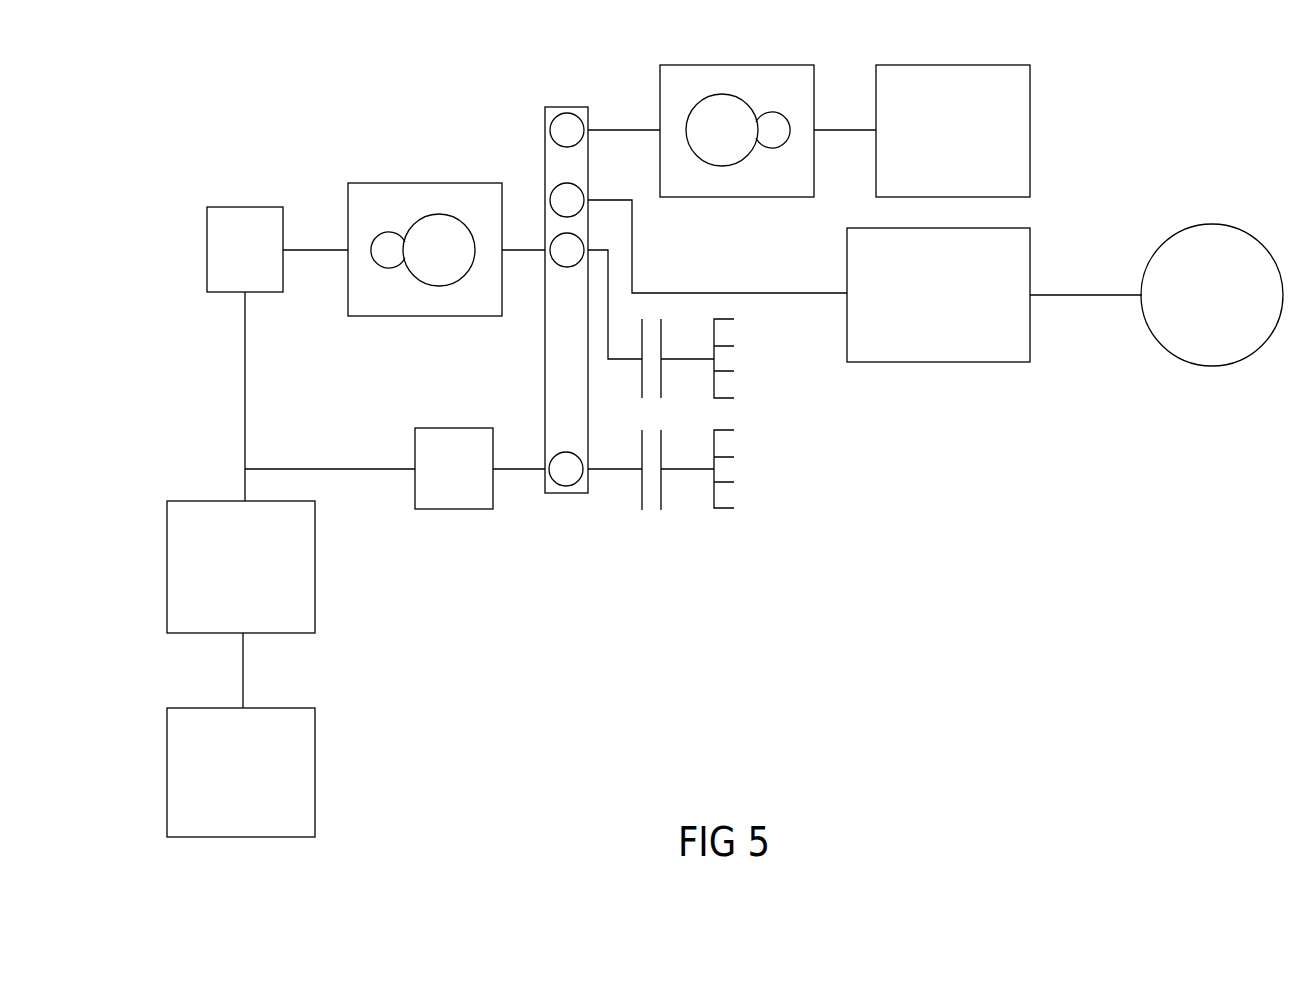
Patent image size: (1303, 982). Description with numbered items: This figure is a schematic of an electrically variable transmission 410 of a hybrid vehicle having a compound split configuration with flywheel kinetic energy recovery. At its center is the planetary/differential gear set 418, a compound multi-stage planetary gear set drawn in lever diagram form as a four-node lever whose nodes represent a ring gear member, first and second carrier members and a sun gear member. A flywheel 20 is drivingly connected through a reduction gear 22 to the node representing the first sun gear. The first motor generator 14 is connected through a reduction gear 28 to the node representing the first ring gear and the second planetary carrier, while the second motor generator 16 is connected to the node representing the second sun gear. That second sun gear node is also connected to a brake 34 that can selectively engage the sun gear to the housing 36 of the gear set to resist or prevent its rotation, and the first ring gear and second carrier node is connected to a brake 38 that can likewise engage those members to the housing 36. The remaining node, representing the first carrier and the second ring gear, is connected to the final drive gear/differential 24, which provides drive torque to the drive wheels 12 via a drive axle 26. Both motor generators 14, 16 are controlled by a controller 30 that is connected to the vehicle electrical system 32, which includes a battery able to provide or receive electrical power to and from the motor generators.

The drive wheels 12 is at (1201, 306).
The first motor generator 14 is at (234, 261).
The second motor generator 16 is at (443, 479).
The flywheel 20 is at (942, 141).
The reduction gear 22 is at (711, 141).
The final drive gear/differential 24 is at (926, 306).
The drive axle 26 is at (1090, 295).
The reduction gear 28 is at (428, 261).
The controller 30 is at (232, 581).
The vehicle electrical system 32 is at (232, 791).
The brake 34 is at (652, 512).
The housing 36 is at (725, 369).
The brake 38 is at (650, 398).
The electrically variable transmission 410 is at (1055, 109).
The planetary/differential gear set 418 is at (555, 98).